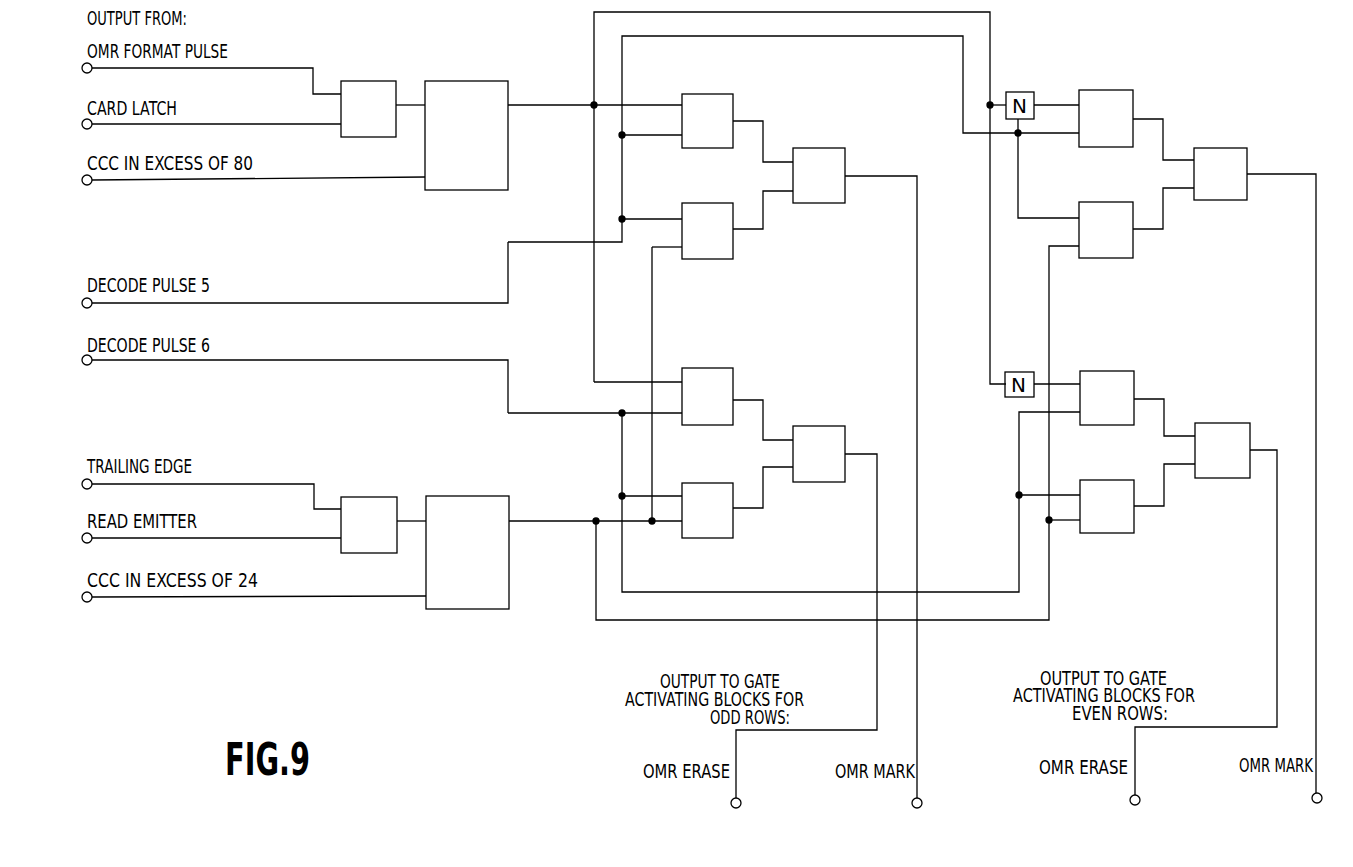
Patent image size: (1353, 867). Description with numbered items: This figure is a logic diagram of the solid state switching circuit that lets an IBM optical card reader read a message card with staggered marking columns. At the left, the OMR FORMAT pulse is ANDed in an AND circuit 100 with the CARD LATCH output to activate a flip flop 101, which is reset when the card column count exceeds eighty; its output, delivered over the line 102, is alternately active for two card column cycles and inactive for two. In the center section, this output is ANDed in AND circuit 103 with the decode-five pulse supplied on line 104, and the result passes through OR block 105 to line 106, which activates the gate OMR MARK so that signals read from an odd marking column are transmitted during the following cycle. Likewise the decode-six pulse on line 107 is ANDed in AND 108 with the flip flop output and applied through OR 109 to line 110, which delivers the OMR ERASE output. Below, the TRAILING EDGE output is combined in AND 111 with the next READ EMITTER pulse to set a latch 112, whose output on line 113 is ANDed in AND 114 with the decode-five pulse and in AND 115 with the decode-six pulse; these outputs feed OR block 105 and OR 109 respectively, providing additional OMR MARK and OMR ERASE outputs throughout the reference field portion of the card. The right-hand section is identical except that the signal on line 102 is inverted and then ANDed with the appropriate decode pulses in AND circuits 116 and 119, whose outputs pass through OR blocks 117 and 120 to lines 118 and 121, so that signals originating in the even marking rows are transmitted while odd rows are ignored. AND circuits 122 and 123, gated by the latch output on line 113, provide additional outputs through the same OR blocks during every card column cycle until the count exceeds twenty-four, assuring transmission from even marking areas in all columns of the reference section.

The AND circuit 100 is at (378, 81).
The flip flop 101 is at (457, 81).
The line 102 is at (547, 90).
The AND circuit 103 is at (688, 94).
The line 104 is at (537, 242).
The OR block 105 is at (808, 148).
The line 106 is at (872, 176).
The line 107 is at (555, 413).
The AND circuit 108 is at (703, 368).
The OR block 109 is at (805, 426).
The line 110 is at (861, 454).
The AND circuit 111 is at (362, 497).
The latch 112 is at (452, 496).
The line 113 is at (537, 507).
The AND circuit 114 is at (733, 248).
The AND circuit 115 is at (733, 531).
The AND circuit 116 is at (1095, 90).
The OR block 117 is at (1223, 148).
The line 118 is at (1272, 158).
The AND circuit 119 is at (1100, 371).
The OR block 120 is at (1213, 423).
The line 121 is at (1266, 450).
The AND circuit 122 is at (1102, 202).
The AND circuit 123 is at (1134, 525).